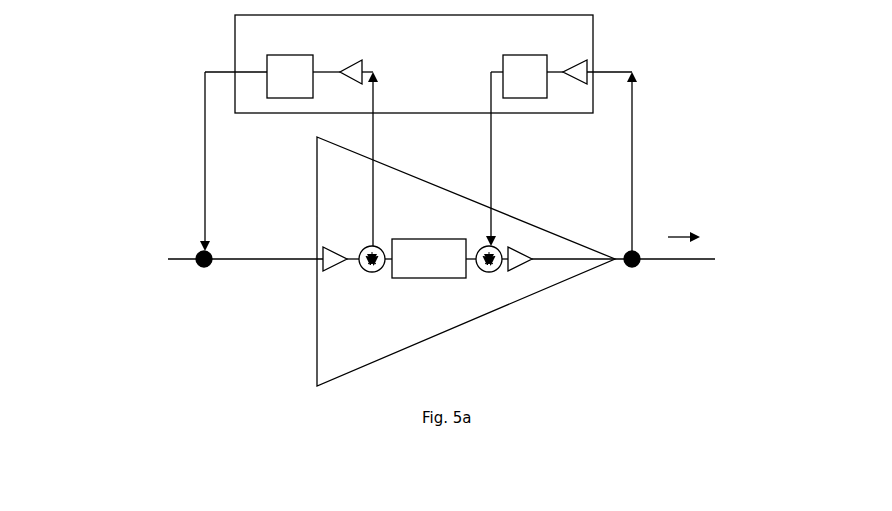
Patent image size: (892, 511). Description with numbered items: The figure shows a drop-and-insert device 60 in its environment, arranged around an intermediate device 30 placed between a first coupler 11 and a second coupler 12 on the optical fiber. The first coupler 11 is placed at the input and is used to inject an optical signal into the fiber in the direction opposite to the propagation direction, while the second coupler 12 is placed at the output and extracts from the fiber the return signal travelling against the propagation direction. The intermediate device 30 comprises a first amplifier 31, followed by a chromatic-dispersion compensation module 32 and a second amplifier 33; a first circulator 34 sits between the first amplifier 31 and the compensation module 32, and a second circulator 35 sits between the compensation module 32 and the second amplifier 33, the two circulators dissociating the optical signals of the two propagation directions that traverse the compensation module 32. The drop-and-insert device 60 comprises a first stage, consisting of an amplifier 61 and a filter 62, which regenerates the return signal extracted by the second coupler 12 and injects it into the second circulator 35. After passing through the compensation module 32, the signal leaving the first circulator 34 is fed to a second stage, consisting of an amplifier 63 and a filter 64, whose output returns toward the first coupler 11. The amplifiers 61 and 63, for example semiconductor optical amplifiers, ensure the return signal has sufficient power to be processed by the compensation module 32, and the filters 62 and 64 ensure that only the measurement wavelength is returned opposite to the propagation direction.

The first coupler 11 is at (208, 267).
The second coupler 12 is at (636, 267).
The intermediate device 30 is at (452, 332).
The first amplifier 31 is at (323, 273).
The chromatic-dispersion compensation module 32 is at (412, 280).
The second amplifier 33 is at (508, 272).
The first circulator 34 is at (360, 248).
The second circulator 35 is at (480, 246).
The drop-and-insert device 60 is at (593, 30).
The amplifier 61 is at (587, 62).
The filter 62 is at (530, 55).
The amplifier 63 is at (362, 65).
The filter 64 is at (279, 62).